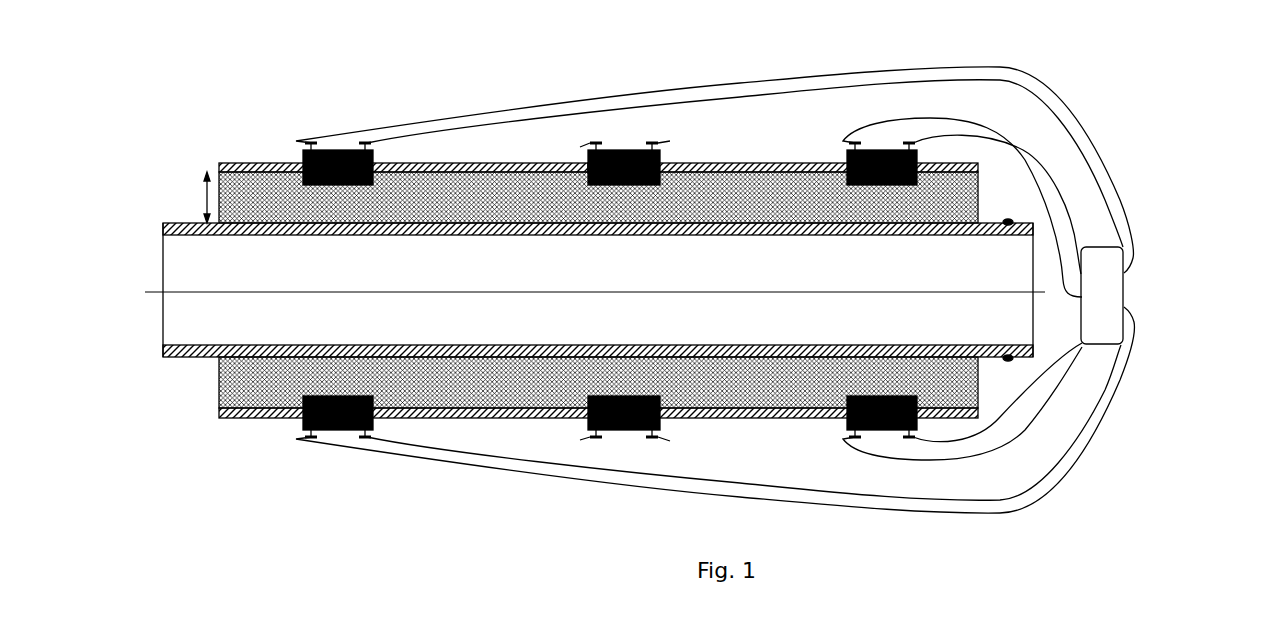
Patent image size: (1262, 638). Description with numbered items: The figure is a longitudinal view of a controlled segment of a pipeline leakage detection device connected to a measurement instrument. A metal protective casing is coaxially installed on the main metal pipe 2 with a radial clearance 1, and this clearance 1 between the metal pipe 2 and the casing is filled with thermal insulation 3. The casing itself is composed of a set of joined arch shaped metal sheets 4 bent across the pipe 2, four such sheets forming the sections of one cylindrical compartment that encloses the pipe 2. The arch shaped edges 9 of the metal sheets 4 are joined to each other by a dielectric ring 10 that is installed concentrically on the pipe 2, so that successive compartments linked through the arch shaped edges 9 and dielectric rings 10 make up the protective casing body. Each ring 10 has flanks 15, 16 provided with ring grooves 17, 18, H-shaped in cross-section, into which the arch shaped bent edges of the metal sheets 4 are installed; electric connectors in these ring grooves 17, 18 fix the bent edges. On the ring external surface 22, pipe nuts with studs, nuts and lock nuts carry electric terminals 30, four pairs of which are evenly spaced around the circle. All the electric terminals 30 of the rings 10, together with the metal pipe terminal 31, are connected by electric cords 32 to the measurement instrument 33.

The radial clearance 1 is at (207, 172).
The main metal pipe 2 is at (205, 357).
The thermal insulation 3 is at (217, 420).
The arch shaped metal sheets 4 is at (540, 110).
The arch shaped edges 9 is at (662, 167).
The dielectric ring 10 is at (889, 150).
The ring flank 15 is at (373, 155).
The ring flank 16 is at (303, 152).
The ring groove 17 is at (378, 168).
The ring groove 18 is at (303, 165).
The ring external surface 22 is at (338, 150).
The electric terminal 30 is at (660, 157).
The metal pipe terminal 31 is at (1012, 221).
The electric cords 32 is at (1120, 200).
The measurement instrument 33 is at (1102, 275).